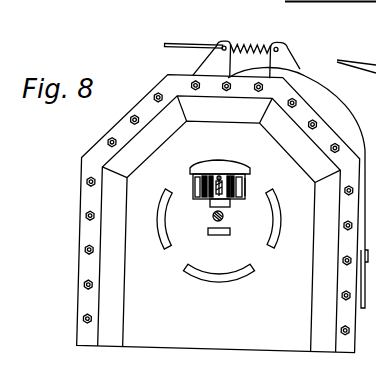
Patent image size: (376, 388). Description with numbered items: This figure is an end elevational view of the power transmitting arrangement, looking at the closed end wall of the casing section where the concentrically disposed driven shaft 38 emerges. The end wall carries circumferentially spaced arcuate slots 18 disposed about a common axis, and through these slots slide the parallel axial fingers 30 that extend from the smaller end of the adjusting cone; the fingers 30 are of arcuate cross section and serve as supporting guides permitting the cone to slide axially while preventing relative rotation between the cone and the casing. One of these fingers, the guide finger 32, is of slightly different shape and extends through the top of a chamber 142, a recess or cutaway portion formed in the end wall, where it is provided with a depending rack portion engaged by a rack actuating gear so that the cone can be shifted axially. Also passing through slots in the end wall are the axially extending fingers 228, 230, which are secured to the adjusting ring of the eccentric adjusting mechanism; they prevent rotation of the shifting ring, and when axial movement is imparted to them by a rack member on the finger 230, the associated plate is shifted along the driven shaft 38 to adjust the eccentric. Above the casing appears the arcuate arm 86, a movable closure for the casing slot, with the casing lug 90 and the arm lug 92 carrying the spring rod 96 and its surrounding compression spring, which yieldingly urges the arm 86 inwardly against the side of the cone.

The arcuate slots 18 is at (208, 159).
The fingers 30 is at (166, 205).
The guide finger 32 is at (223, 161).
The driven shaft 38 is at (212, 217).
The arcuate arm 86 is at (284, 75).
The lug 90 is at (200, 61).
The lug 92 is at (281, 42).
The spring rod 96 is at (193, 45).
The chamber 142 is at (246, 191).
The finger 228 is at (221, 235).
The finger 230 is at (229, 206).